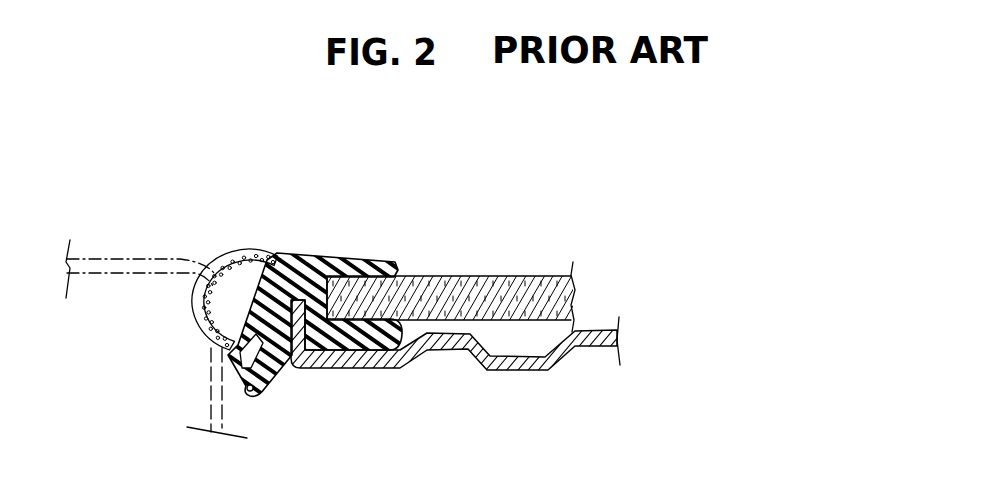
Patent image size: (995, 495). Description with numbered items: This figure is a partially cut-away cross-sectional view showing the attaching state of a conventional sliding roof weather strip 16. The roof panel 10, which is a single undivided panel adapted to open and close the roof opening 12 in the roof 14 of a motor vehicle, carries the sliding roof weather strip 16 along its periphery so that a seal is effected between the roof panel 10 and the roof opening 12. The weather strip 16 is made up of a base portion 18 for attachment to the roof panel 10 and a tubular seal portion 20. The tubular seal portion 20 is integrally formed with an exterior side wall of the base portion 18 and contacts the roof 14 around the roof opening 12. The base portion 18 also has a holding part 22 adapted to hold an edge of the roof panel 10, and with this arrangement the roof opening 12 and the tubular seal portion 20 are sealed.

The roof panel 10 is at (520, 273).
The roof opening 12 is at (222, 410).
The roof 14 is at (141, 258).
The sliding roof weather strip 16 is at (316, 322).
The base portion 18 is at (290, 257).
The tubular seal portion 20 is at (235, 256).
The holding part 22 is at (362, 337).